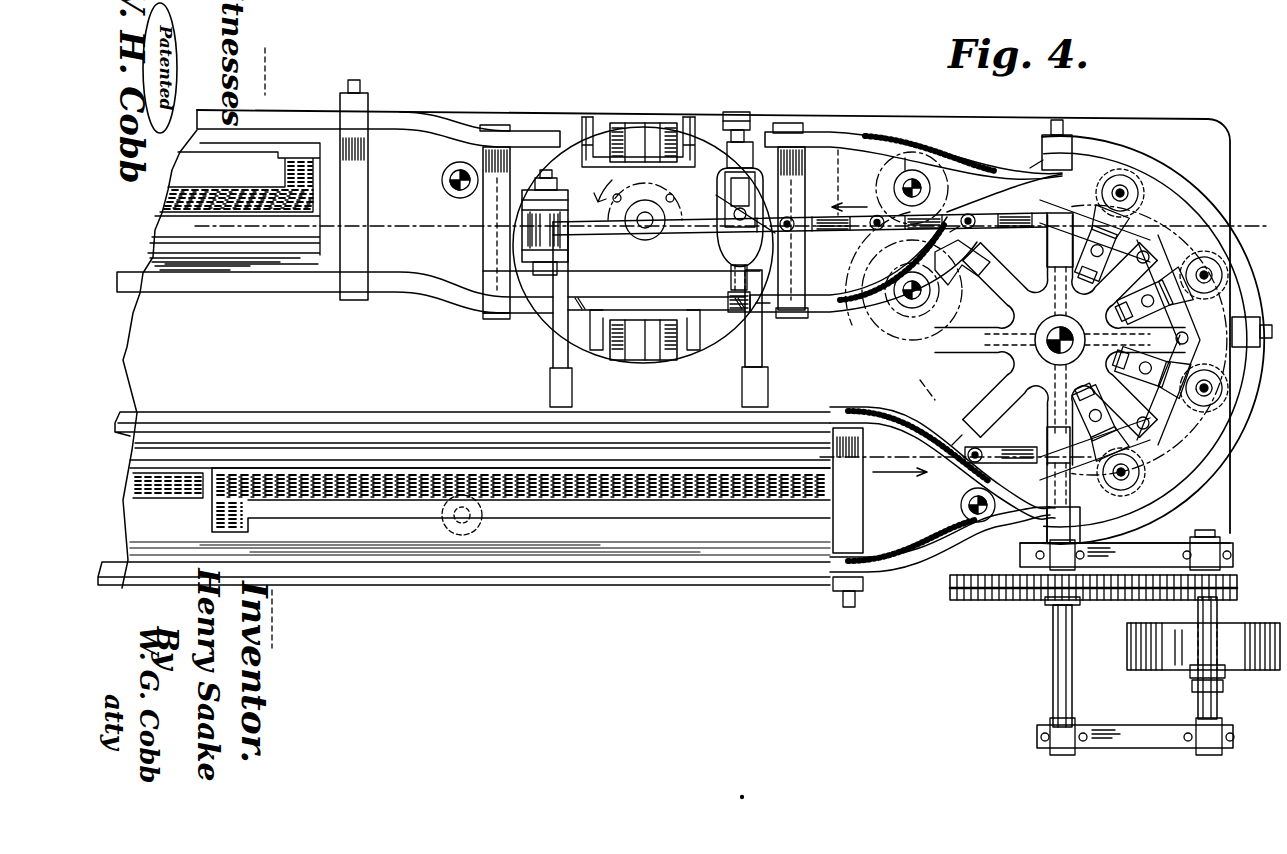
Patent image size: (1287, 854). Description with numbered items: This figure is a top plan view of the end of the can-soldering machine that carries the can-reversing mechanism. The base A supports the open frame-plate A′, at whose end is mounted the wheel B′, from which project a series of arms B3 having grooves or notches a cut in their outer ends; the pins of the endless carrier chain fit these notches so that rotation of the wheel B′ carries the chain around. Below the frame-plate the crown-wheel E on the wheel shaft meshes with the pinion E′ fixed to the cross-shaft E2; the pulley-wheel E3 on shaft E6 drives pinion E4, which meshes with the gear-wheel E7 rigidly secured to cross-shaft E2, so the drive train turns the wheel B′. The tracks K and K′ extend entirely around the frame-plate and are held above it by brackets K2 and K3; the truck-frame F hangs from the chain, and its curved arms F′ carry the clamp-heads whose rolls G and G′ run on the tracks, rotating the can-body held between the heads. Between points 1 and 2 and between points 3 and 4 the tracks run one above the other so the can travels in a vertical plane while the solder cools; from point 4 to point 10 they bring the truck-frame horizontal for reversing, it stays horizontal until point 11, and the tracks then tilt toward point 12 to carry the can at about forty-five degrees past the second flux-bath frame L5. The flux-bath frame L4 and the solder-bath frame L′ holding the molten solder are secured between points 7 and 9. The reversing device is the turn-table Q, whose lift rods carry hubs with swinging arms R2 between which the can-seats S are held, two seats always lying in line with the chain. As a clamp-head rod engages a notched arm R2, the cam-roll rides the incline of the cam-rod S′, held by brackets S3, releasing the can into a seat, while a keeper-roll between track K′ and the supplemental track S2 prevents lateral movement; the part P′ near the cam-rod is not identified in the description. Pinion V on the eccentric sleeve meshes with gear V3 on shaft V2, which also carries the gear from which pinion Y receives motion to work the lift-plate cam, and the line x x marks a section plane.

The track point 12 is at (366, 112).
The track point 11 is at (462, 133).
The track K is at (464, 346).
The track K' is at (472, 390).
The bracket K2 is at (1234, 340).
The bracket K3 is at (1062, 120).
The turn-table Q is at (580, 125).
The arms R2 is at (590, 118).
The can-seat S is at (611, 235).
The cam-rod S' is at (719, 205).
The supplemental track S2 is at (666, 273).
The brackets S3 is at (570, 366).
The roll G is at (976, 295).
The roll G' is at (737, 325).
The track point 10 is at (832, 128).
The track point 9 is at (868, 408).
The pinion Y is at (905, 160).
The pinion V is at (925, 185).
The shaft V2 is at (920, 178).
The gear V3 is at (900, 291).
The link P' is at (779, 189).
The base A is at (724, 312).
The frame-plate A' is at (1153, 340).
The grooves or notches a is at (940, 335).
The wheel B' is at (1081, 356).
The arms B3 is at (1000, 437).
The crown-wheel E is at (923, 393).
The pinion E' is at (1048, 485).
The cross-shaft E2 is at (1054, 622).
The pulley-wheel E3 is at (1268, 670).
The pinion E4 is at (1236, 590).
The shaft E6 is at (1200, 676).
The gear-wheel E7 is at (1110, 600).
The truck-frame F is at (1152, 438).
The curved arms F' is at (1153, 462).
The solder-bath frame L' is at (480, 511).
The flux-bath frame L4 is at (172, 498).
The second flux-bath frame L5 is at (200, 200).
The track point 1 is at (953, 438).
The track point 2 is at (955, 237).
The track point 3 is at (1050, 510).
The track point 4 is at (1030, 154).
The track point 7 is at (759, 315).
The section line x is at (266, 349).